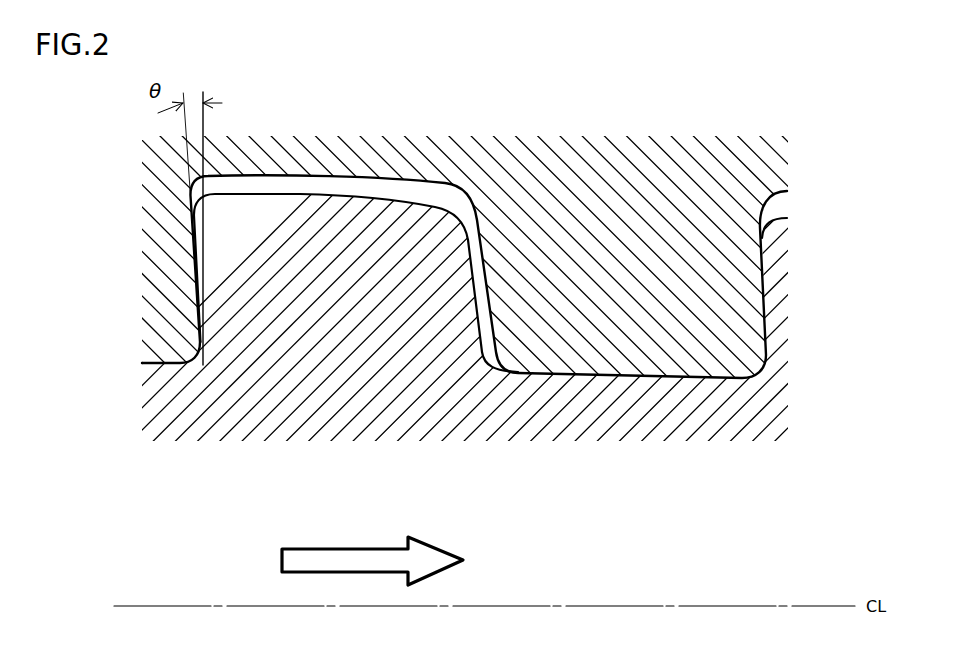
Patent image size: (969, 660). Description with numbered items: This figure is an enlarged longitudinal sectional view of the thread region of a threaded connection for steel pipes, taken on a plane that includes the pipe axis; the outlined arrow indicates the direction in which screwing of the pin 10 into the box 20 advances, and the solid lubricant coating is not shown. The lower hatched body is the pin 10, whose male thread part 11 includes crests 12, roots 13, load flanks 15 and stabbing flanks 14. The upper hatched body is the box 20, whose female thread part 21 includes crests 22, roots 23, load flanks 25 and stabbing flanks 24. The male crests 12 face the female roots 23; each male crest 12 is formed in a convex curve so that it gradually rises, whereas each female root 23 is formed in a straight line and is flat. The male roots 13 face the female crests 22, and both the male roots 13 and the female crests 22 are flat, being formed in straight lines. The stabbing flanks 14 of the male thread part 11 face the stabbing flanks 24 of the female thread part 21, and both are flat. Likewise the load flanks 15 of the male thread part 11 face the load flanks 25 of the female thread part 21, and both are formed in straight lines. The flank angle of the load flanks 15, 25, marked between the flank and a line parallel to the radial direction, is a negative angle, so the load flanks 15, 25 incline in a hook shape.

The pin 10 is at (797, 430).
The male thread part 11 is at (775, 433).
The crest 12 is at (321, 195).
The root 13 is at (642, 378).
The stabbing flank 14 is at (468, 294).
The load flank 15 is at (767, 303).
The box 20 is at (798, 139).
The female thread part 21 is at (772, 139).
The crest 22 is at (612, 377).
The root 23 is at (257, 176).
The stabbing flank 24 is at (485, 278).
The load flank 25 is at (763, 277).